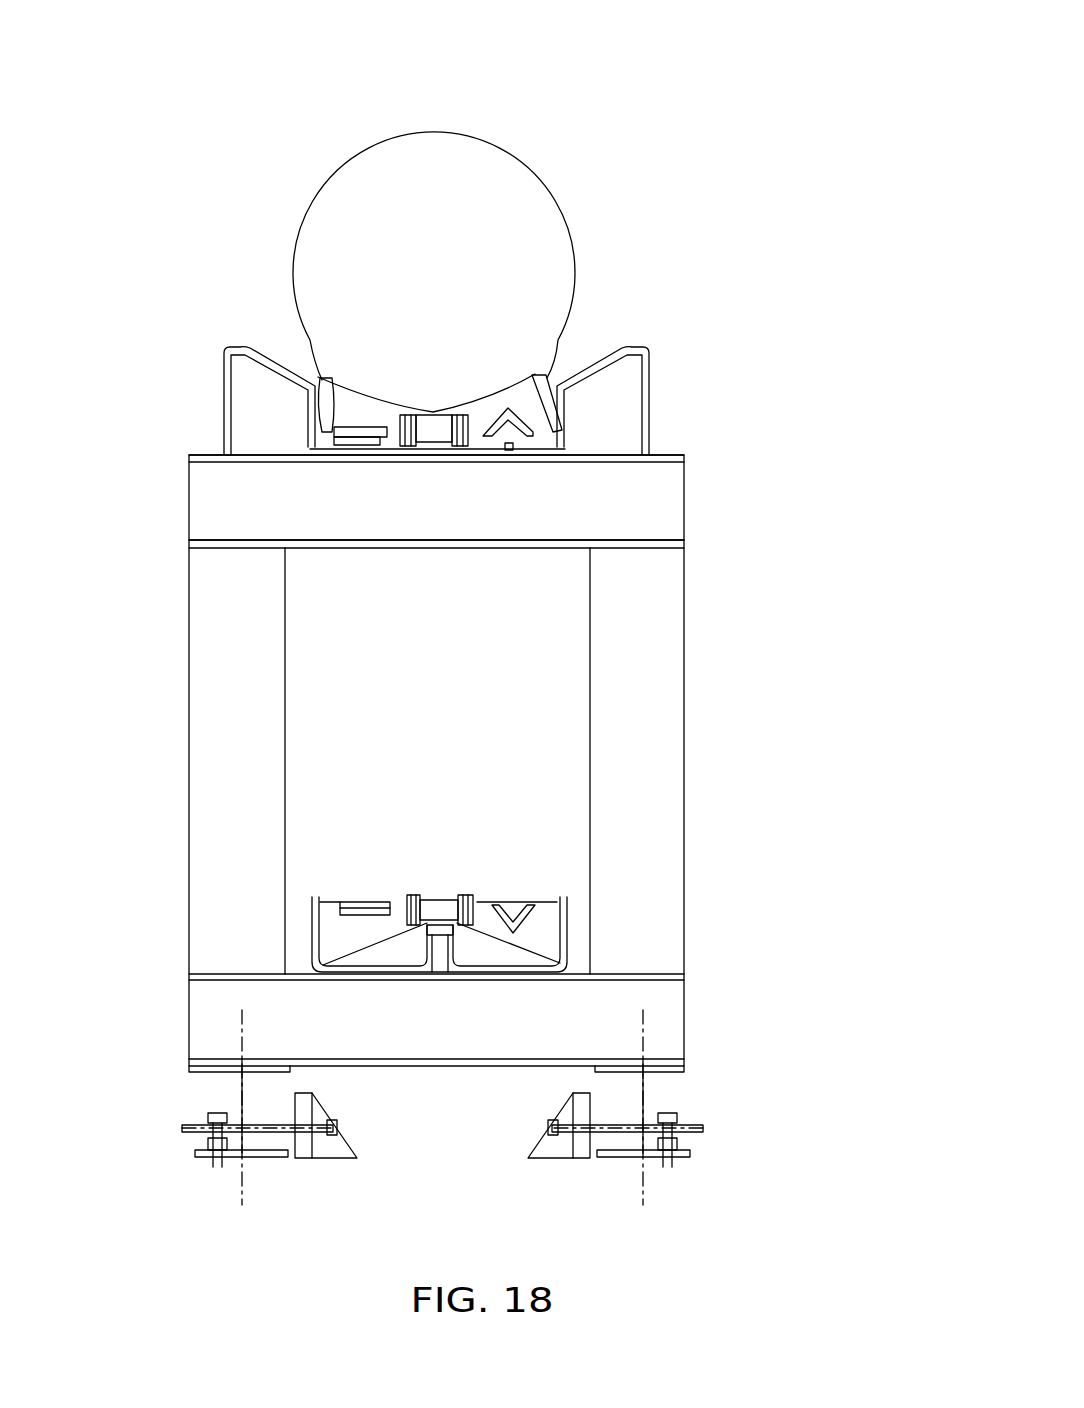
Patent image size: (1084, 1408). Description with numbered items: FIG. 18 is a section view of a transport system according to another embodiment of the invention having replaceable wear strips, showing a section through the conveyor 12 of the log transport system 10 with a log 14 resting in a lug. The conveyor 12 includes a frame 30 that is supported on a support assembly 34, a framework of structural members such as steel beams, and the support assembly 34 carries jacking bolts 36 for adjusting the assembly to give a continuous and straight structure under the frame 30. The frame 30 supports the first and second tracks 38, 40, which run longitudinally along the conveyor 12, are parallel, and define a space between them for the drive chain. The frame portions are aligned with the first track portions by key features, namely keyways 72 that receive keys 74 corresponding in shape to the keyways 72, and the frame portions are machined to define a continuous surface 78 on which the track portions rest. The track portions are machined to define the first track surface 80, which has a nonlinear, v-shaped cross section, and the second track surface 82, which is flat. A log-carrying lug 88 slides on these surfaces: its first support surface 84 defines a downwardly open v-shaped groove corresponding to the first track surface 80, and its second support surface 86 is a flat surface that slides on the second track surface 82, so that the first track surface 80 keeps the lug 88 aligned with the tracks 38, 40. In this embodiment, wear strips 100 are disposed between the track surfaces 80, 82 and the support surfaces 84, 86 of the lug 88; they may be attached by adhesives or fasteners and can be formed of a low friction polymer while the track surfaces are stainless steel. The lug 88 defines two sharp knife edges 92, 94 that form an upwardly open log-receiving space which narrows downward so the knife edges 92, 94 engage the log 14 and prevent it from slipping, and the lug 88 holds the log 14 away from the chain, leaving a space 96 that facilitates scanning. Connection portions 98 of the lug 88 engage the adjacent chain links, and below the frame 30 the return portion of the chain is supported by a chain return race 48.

The log transport system 10 is at (737, 132).
The conveyor 12 is at (680, 404).
The log 14 is at (353, 157).
The frame 30 is at (652, 438).
The support assembly 34 is at (684, 517).
The jacking bolt 36 is at (208, 1128).
The first track 38 is at (527, 450).
The second track 40 is at (333, 448).
The chain return race 48 is at (570, 938).
The keyway 72 is at (487, 450).
The key 74 is at (575, 368).
The continuous surface 78 is at (320, 380).
The first track surface 80 is at (560, 392).
The second track surface 82 is at (353, 390).
The first support surface 84 is at (457, 446).
The second support surface 86 is at (373, 448).
The log-carrying lug 88 is at (470, 418).
The knife edge 92 is at (513, 405).
The knife edge 94 is at (340, 390).
The space 96 is at (433, 408).
The connection portion 98 is at (454, 415).
The wear strip 100 is at (555, 372).